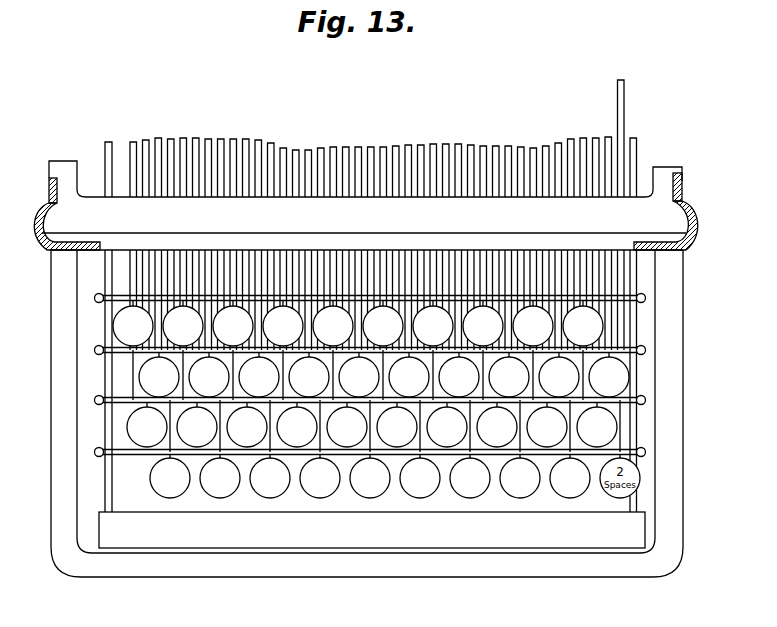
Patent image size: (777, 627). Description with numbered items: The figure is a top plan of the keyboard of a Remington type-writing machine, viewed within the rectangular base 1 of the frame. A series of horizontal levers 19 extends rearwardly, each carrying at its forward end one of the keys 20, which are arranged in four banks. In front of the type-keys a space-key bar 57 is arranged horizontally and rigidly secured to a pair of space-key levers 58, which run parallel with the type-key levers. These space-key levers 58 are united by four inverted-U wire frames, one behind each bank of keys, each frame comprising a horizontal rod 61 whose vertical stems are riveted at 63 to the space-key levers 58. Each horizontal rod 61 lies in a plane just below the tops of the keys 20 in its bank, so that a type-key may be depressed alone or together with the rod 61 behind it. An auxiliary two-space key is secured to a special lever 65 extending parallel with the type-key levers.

The rectangular base 1 is at (367, 413).
The horizontal levers 19 is at (281, 145).
The keys 20 is at (358, 452).
The space-key bar 57 is at (372, 530).
The space-key levers 58 is at (109, 143).
The horizontal rod 61 is at (120, 296).
The rivet connection 63 is at (101, 347).
The special lever 65 is at (616, 94).